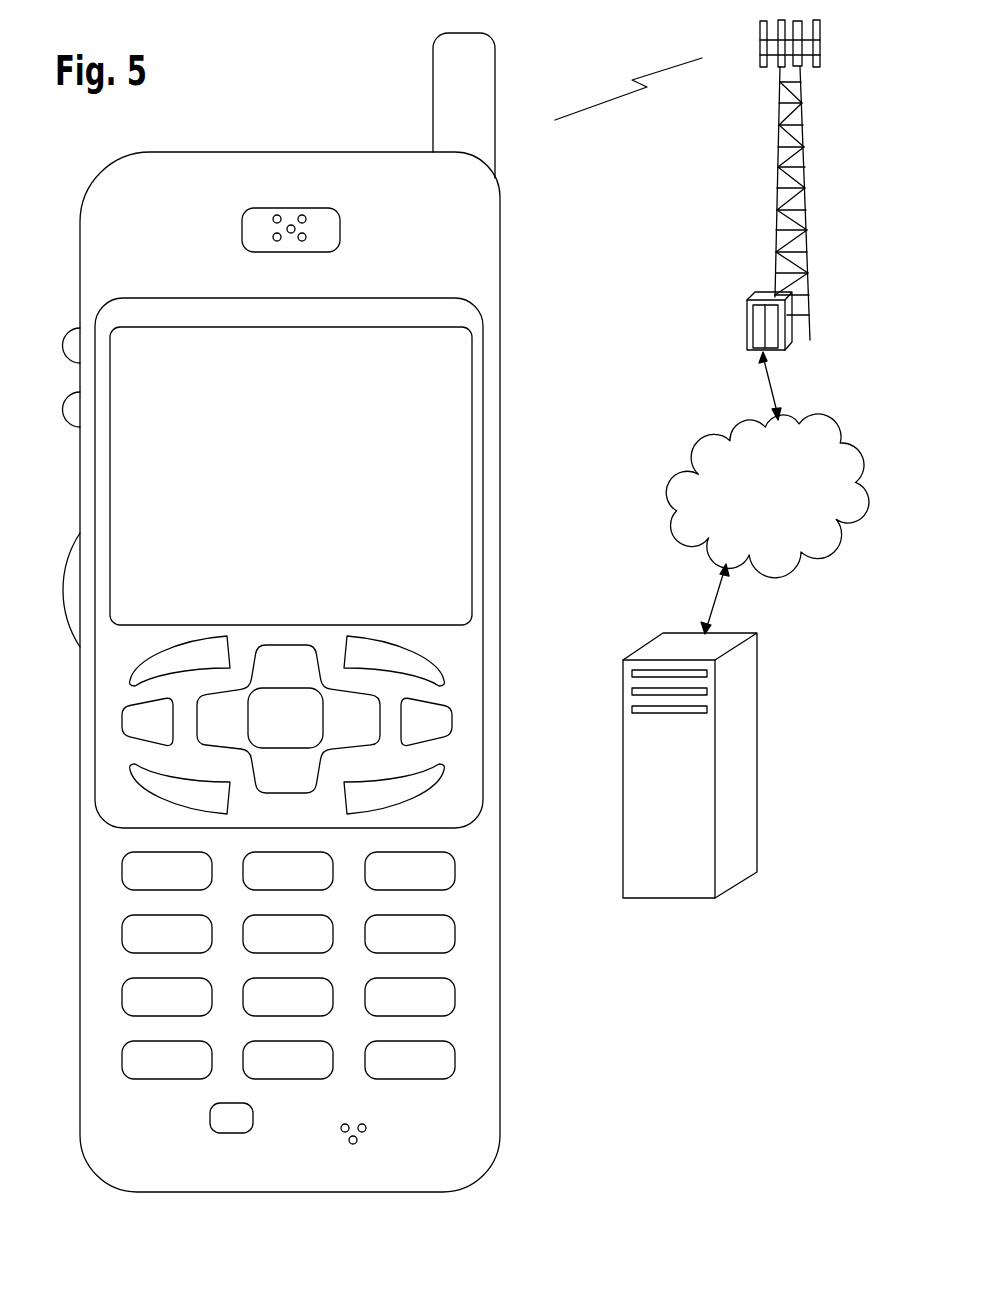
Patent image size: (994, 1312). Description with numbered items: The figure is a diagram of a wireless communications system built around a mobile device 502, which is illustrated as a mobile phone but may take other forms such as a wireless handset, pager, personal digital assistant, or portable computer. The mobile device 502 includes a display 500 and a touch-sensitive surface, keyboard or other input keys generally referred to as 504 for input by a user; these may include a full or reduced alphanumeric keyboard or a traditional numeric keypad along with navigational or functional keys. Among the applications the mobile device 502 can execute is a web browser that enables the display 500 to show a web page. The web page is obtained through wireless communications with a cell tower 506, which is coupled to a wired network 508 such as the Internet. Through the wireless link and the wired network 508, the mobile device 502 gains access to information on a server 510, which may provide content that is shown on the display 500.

The display 500 is at (318, 627).
The mobile device 502 is at (130, 1190).
The input keys 504 is at (513, 633).
The cell tower 506 is at (773, 200).
The wired network 508 is at (688, 545).
The server 510 is at (668, 898).